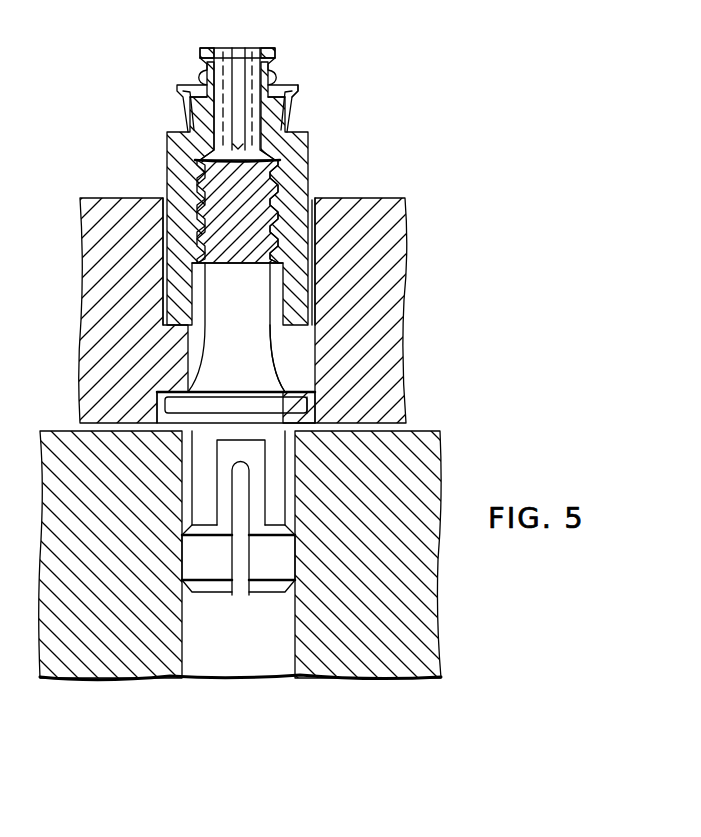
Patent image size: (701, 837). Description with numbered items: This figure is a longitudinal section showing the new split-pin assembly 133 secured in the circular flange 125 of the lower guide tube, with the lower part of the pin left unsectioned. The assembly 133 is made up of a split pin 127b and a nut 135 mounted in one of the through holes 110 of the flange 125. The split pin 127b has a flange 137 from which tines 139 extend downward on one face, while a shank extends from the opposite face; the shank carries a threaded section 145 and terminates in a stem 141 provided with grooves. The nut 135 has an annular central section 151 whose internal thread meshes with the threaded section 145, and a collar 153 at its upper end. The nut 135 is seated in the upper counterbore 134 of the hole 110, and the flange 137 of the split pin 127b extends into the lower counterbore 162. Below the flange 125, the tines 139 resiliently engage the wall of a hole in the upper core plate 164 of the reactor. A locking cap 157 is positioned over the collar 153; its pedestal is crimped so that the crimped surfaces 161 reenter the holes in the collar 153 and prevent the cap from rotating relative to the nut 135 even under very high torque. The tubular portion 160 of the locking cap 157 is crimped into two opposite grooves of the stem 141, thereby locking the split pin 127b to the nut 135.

The through hole 110 is at (272, 352).
The circular flange 125 is at (100, 272).
The split pin 127b is at (270, 372).
The split-pin assembly 133 is at (47, 386).
The upper counterbore 134 is at (316, 200).
The nut 135 is at (188, 234).
The flange 137 is at (305, 405).
The tines 139 is at (206, 522).
The stem 141 is at (230, 47).
The threaded section 145 is at (205, 186).
The annular central section 151 is at (362, 198).
The collar 153 is at (207, 122).
The locking cap 157 is at (300, 100).
The tubular portion 160 is at (254, 50).
The crimped surfaces 161 is at (182, 88).
The lower counterbore 162 is at (158, 410).
The upper core plate 164 is at (405, 595).